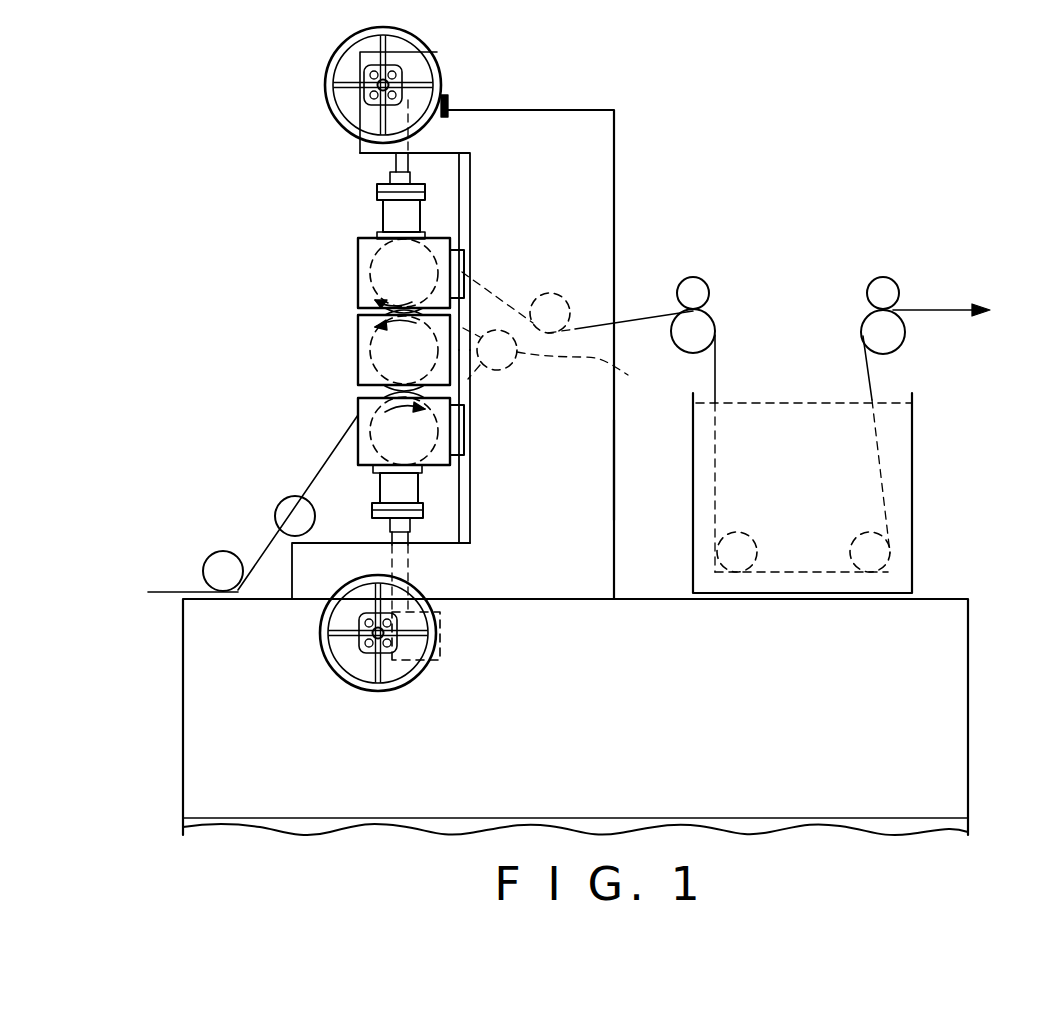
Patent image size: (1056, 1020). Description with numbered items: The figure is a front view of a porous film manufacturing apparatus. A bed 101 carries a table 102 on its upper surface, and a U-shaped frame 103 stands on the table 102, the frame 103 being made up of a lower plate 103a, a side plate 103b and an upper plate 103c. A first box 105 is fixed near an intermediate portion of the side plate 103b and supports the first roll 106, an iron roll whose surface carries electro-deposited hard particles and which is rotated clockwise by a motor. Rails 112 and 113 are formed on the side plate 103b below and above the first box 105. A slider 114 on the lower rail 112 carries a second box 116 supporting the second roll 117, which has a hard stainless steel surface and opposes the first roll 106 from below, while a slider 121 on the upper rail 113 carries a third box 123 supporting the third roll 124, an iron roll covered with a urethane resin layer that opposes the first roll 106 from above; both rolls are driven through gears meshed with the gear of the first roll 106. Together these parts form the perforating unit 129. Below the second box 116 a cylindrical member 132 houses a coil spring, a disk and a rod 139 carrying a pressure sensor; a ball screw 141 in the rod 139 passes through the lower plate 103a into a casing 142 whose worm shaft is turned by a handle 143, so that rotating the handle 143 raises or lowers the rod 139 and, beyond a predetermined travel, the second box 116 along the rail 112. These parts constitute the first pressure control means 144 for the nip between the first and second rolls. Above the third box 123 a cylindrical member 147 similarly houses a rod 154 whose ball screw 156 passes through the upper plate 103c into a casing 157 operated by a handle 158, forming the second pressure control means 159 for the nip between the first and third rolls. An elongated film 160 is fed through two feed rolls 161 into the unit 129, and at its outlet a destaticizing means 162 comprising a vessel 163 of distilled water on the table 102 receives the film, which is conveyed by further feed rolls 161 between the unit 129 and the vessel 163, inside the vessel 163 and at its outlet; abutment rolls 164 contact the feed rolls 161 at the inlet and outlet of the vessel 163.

The bed 101 is at (970, 822).
The table 102 is at (970, 750).
The U-shaped frame 103 is at (616, 211).
The lower plate 103a is at (302, 584).
The side plate 103b is at (616, 470).
The upper plate 103c is at (535, 120).
The first box 105 is at (366, 330).
The first roll 106 is at (365, 360).
The lower rail 112 is at (470, 490).
The upper rail 113 is at (470, 220).
The slider 114 is at (466, 440).
The second box 116 is at (360, 415).
The second roll 117 is at (360, 450).
The slider 121 is at (466, 262).
The third box 123 is at (360, 246).
The third roll 124 is at (365, 270).
The perforating unit 129 is at (366, 353).
The cylindrical member 132 is at (382, 492).
The rod 139 is at (388, 522).
The ball screw 141 is at (410, 538).
The casing 142 is at (446, 632).
The handle 143 is at (440, 652).
The first pressure control means 144 is at (380, 627).
The cylindrical member 147 is at (386, 215).
The rod 154 is at (412, 178).
The ball screw 156 is at (396, 165).
The casing 157 is at (448, 102).
The handle 158 is at (426, 50).
The second pressure control means 159 is at (366, 89).
The elongated film 160 is at (168, 590).
The feed roll 161 is at (566, 300).
The destaticizing means 162 is at (914, 467).
The vessel 163 is at (908, 505).
The abutment roll 164 is at (711, 287).